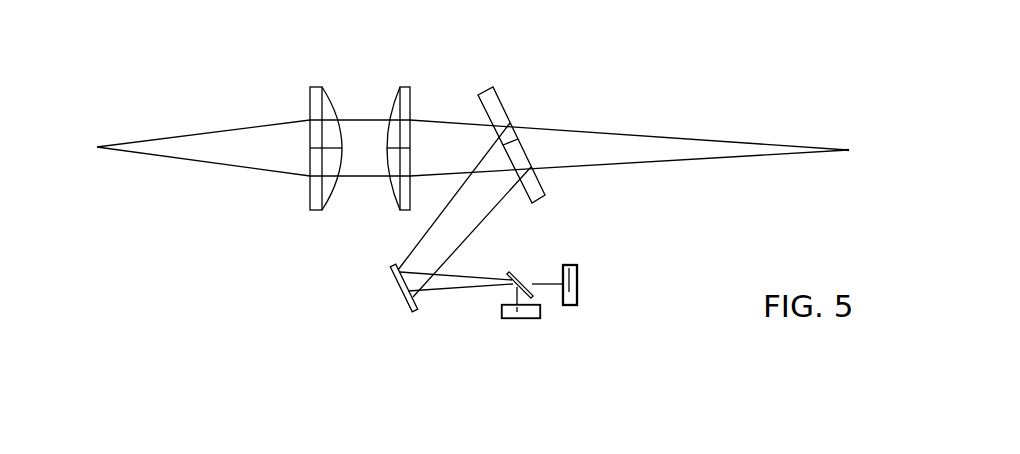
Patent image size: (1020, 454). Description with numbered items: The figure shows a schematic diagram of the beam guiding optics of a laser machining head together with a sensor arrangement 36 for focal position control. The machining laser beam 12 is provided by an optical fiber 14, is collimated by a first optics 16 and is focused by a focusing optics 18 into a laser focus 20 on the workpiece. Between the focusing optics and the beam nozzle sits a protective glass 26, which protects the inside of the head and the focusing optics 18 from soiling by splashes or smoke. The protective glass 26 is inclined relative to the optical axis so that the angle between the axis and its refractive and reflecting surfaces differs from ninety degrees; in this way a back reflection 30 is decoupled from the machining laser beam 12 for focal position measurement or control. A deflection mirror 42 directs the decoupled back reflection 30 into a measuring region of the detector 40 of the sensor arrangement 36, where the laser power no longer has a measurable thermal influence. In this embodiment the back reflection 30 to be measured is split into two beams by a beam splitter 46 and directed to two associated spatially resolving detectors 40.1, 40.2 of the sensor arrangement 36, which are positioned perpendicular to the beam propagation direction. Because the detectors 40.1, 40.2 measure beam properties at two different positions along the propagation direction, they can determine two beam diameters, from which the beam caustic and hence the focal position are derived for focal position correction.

The machining laser beam 12 is at (574, 141).
The optical fiber 14 is at (100, 147).
The first optics 16 is at (316, 87).
The focusing optics 18 is at (403, 87).
The laser focus 20 is at (847, 149).
The protective glass 26 is at (486, 91).
The back reflection 30 is at (443, 228).
The sensor arrangement 36 is at (570, 252).
The detector 40 is at (562, 320).
The first spatially resolving detector 40.1 is at (577, 287).
The second spatially resolving detector 40.2 is at (517, 318).
The deflection mirror 42 is at (400, 285).
The beam splitter 46 is at (512, 275).